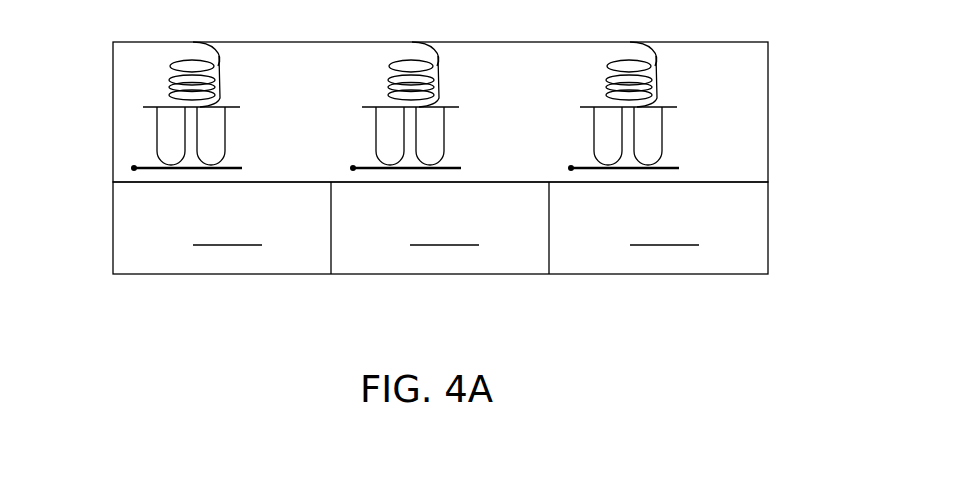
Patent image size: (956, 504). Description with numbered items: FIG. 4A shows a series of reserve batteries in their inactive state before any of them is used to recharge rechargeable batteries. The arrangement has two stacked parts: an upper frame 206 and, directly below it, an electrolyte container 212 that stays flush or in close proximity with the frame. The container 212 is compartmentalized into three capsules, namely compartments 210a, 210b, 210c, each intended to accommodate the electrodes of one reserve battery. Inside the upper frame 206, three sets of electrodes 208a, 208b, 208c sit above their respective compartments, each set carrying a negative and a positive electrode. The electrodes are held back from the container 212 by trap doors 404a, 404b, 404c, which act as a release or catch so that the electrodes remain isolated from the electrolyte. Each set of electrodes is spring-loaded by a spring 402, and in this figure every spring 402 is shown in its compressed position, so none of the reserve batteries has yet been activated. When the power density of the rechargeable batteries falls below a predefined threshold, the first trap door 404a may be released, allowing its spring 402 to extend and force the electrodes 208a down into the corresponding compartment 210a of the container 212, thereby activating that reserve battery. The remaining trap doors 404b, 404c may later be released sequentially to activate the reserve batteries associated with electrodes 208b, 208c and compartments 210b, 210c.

The upper frame 206 is at (768, 85).
The electrolyte container 212 is at (768, 210).
The spring 402 is at (220, 72).
The electrodes 208a is at (225, 128).
The electrodes 208b is at (444, 136).
The electrodes 208c is at (661, 136).
The trap door 404a is at (228, 167).
The trap door 404b is at (438, 154).
The trap door 404c is at (655, 154).
The compartment 210a is at (227, 229).
The compartment 210b is at (444, 229).
The compartment 210c is at (664, 229).